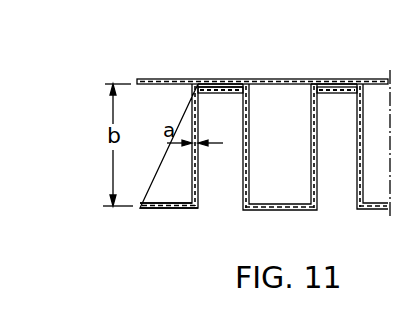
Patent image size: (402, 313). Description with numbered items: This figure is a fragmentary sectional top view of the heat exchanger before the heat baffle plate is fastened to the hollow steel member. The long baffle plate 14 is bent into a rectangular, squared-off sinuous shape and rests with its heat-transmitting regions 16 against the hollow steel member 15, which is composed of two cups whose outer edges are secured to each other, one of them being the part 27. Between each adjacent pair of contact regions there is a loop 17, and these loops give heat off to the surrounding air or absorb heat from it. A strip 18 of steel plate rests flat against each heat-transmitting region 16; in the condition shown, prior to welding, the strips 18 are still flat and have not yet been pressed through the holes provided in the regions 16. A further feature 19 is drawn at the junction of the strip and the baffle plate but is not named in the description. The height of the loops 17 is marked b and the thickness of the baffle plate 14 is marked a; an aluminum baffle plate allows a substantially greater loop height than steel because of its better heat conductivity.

The baffle plate 14 is at (159, 216).
The hollow steel member 15 is at (280, 77).
The heat-transmitting regions 16 is at (207, 85).
The loop 17 is at (264, 216).
The strip of steel plate 18 is at (219, 96).
The adhesive layer 19 is at (225, 87).
The part of hollow steel member 27 is at (310, 80).